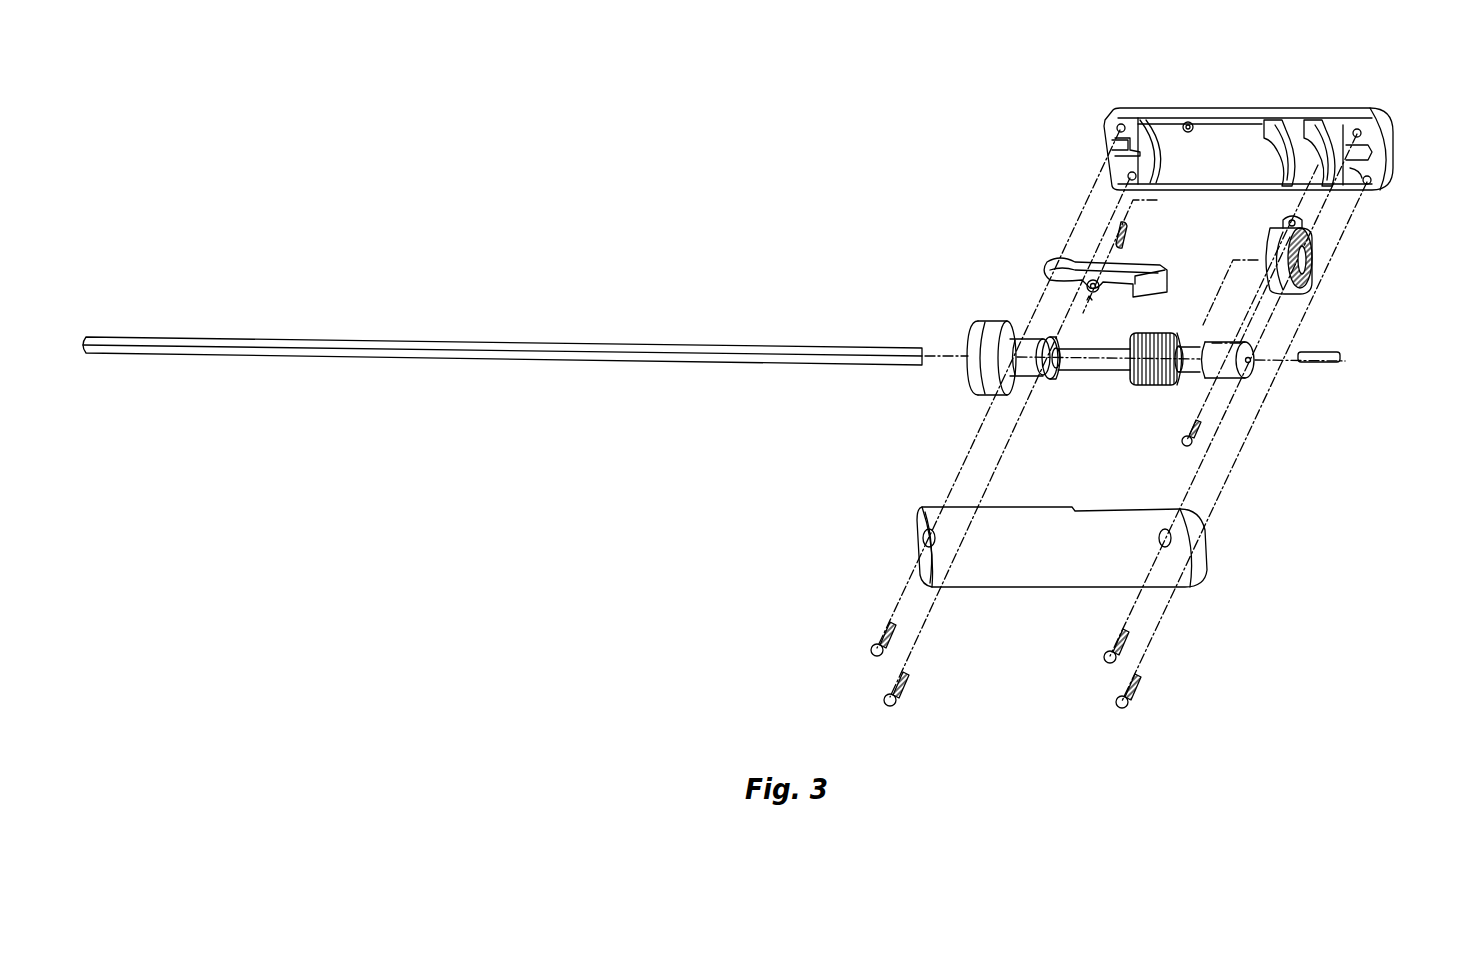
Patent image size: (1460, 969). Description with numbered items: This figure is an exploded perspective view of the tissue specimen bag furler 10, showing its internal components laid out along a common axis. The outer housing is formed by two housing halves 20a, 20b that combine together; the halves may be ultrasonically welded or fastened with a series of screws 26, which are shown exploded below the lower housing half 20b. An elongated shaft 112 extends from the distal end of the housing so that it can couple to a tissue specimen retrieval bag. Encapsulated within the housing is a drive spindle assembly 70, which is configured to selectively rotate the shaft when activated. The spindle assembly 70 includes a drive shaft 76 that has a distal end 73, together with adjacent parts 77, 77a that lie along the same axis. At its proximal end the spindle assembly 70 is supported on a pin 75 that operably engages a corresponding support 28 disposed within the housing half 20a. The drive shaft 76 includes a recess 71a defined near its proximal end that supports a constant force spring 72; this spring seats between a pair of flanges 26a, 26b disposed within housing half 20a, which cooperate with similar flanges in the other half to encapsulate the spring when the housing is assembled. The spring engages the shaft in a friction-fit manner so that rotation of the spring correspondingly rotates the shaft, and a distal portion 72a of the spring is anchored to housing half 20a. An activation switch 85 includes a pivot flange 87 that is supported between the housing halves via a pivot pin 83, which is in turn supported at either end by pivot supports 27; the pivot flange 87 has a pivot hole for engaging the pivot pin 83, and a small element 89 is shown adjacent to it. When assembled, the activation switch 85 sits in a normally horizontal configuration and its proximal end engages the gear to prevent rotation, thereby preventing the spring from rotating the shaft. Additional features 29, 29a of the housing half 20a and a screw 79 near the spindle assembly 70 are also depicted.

The tissue specimen bag furler 10 is at (1005, 100).
The elongated shaft 112 is at (470, 340).
The housing half 20a is at (1279, 108).
The housing half 20b is at (1045, 577).
The screws 26 is at (1117, 665).
The flange 26a is at (1271, 136).
The flange 26b is at (1328, 132).
The pivot support 27 is at (1205, 126).
The support 28 is at (1380, 152).
The spring latch 29 is at (1157, 126).
The slot 29a is at (1118, 152).
The drive spindle assembly 70 is at (1262, 353).
The recess 71a is at (1193, 340).
The constant force spring 72 is at (1318, 262).
The distal portion of the constant force spring 72a is at (1305, 226).
The distal end of the drive shaft 73 is at (985, 388).
The pin 75 is at (1345, 356).
The drive shaft 76 is at (1095, 372).
The flange 77 is at (1048, 382).
The sleeve 77a is at (1027, 380).
The screw 79 is at (1195, 443).
The pivot pin 83 is at (1112, 232).
The activation switch 85 is at (1060, 258).
The pivot flange 87 is at (1100, 295).
The pivot pin 89 is at (1087, 302).